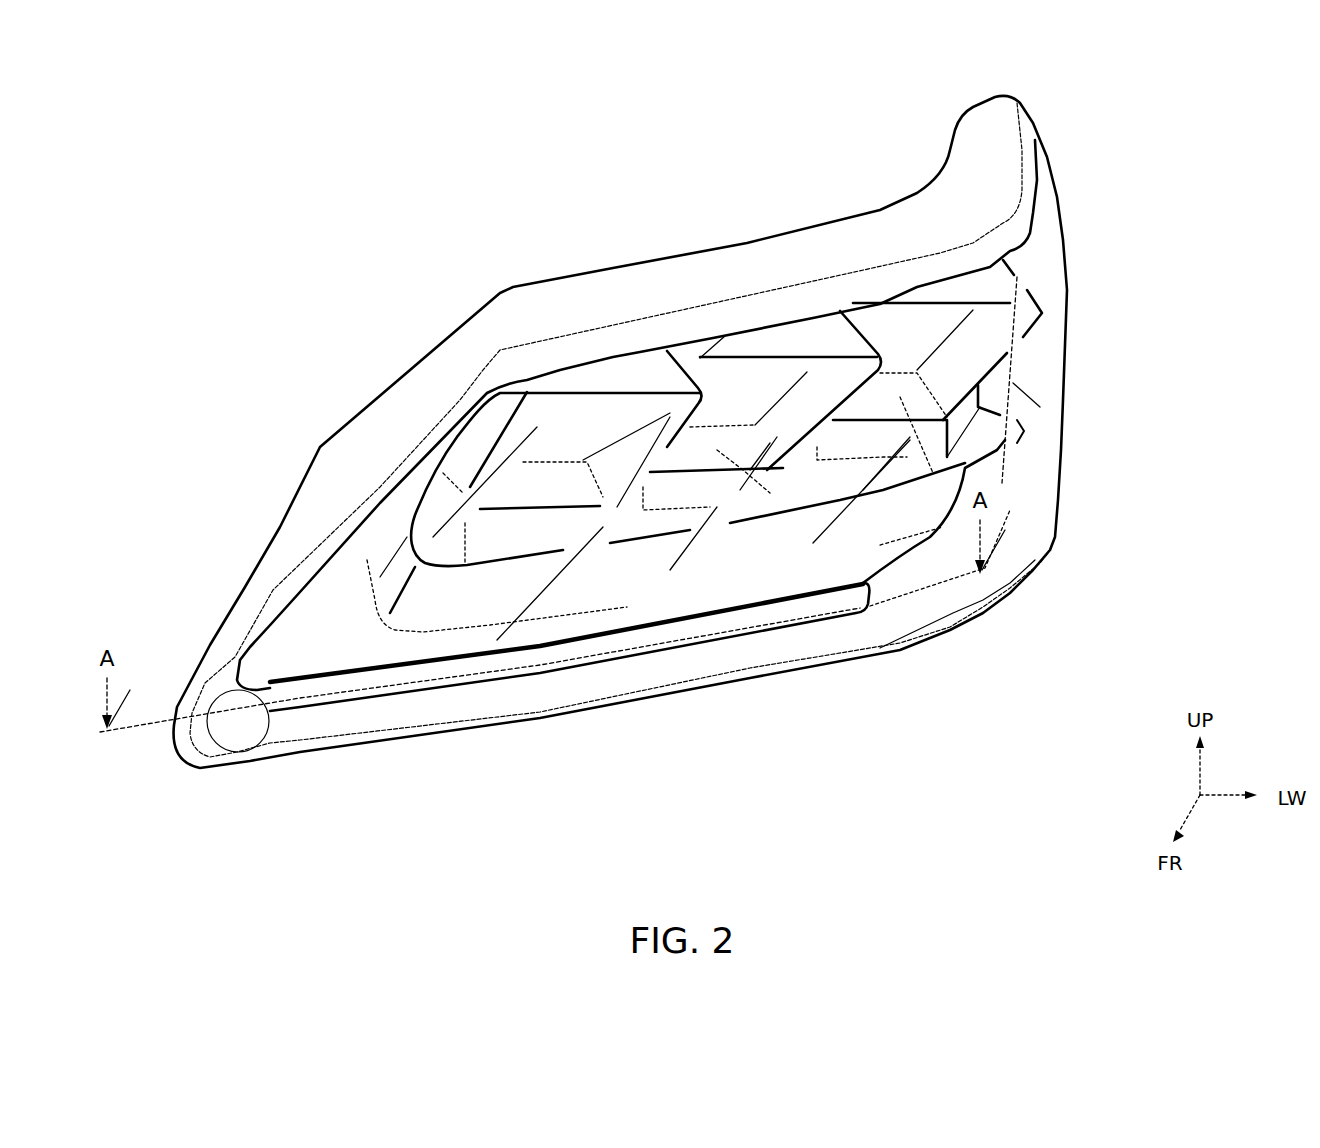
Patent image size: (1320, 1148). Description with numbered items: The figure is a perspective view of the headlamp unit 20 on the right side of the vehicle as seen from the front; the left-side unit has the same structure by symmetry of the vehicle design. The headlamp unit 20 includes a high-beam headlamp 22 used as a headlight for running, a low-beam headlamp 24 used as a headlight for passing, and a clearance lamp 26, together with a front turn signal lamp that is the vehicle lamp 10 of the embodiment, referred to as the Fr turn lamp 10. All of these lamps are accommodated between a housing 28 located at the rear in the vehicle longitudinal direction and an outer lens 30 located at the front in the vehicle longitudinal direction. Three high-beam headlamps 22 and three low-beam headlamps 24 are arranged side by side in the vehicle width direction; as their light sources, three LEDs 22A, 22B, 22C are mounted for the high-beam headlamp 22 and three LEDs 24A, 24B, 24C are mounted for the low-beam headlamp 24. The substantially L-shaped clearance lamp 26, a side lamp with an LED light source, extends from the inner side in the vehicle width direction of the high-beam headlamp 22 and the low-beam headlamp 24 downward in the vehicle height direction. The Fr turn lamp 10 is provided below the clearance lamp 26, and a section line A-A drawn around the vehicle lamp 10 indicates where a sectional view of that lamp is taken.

The vehicle lamp 10 is at (288, 737).
The headlamp unit 20 is at (458, 207).
The high-beam headlamp 22 is at (613, 167).
The LED 22A is at (580, 427).
The LED 22B is at (747, 380).
The LED 22C is at (895, 330).
The low-beam headlamp 24 is at (953, 780).
The LED 24A is at (553, 487).
The LED 24B is at (783, 457).
The LED 24C is at (900, 400).
The clearance lamp 26 is at (305, 630).
The housing 28 is at (387, 427).
The outer lens 30 is at (1015, 392).